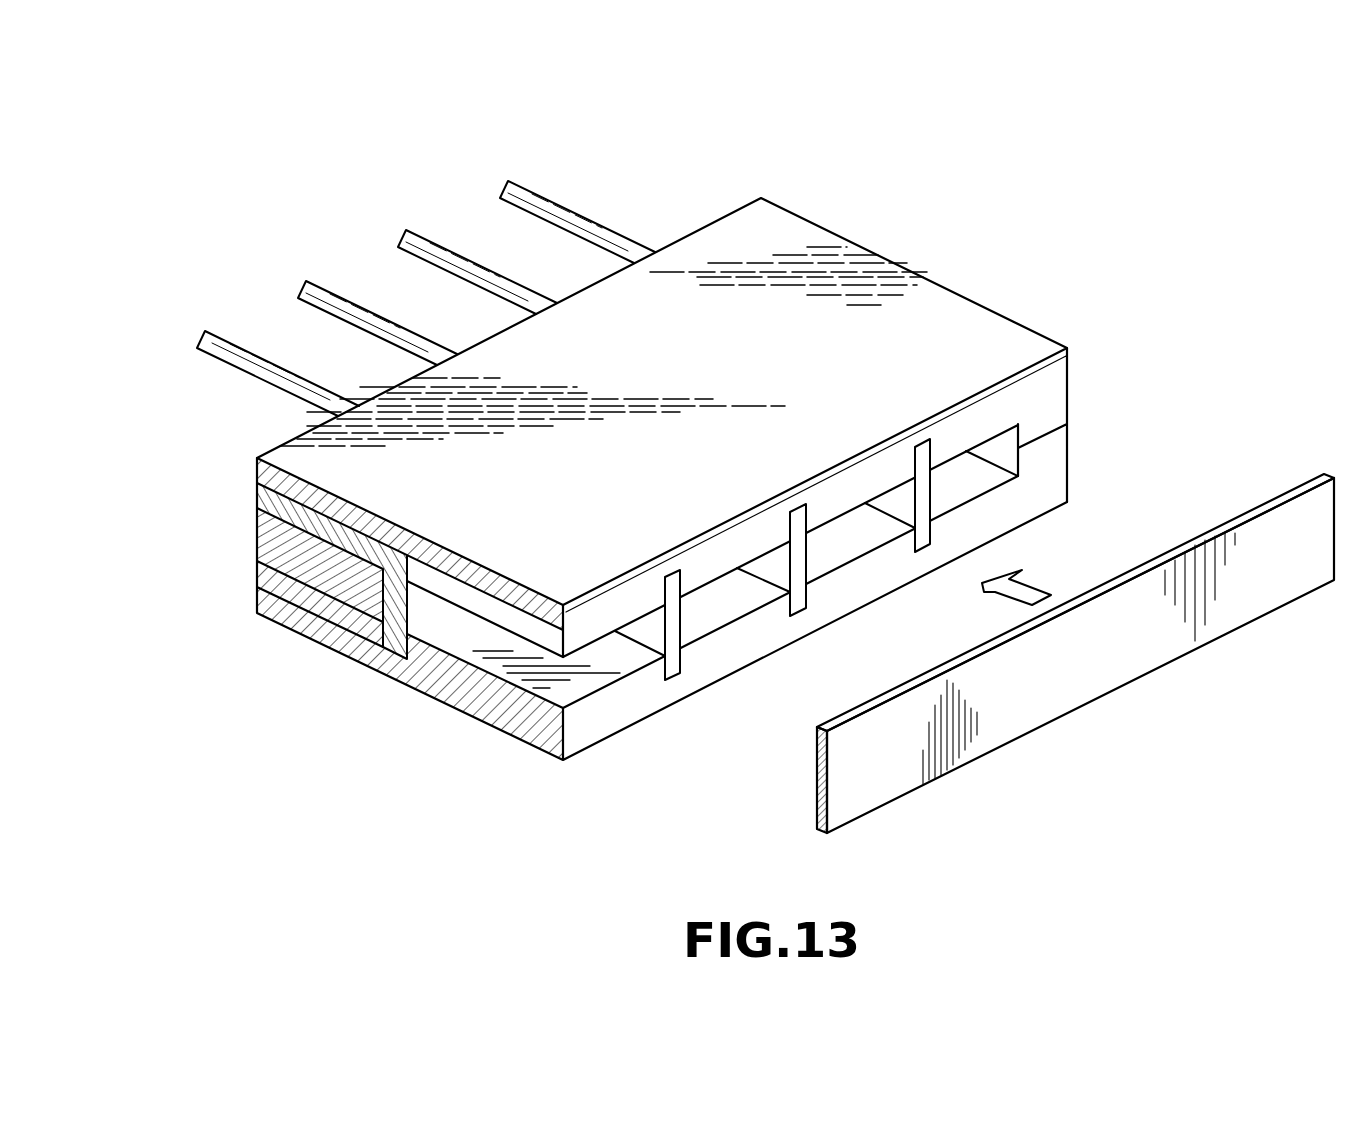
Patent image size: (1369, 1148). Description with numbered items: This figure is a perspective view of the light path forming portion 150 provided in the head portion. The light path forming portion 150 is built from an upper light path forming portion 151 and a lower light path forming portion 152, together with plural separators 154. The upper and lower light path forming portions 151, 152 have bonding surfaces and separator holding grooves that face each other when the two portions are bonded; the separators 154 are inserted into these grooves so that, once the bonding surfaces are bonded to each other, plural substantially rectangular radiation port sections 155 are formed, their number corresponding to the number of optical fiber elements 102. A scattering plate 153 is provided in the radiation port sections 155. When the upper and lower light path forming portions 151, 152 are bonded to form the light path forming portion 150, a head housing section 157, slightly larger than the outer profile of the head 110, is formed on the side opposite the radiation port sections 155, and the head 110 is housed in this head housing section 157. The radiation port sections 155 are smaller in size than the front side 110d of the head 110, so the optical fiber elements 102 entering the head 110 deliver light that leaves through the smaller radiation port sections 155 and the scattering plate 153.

The light path forming portion 150 is at (848, 190).
The upper light path forming portion 151 is at (932, 298).
The lower light path forming portion 152 is at (1053, 477).
The scattering plate 153 is at (1138, 666).
The separators 154 is at (669, 582).
The radiation port sections 155 is at (815, 560).
The head housing section 157 is at (312, 514).
The optical fiber elements 102 is at (551, 206).
The head 110 is at (338, 585).
The front side of the head 110d is at (422, 615).